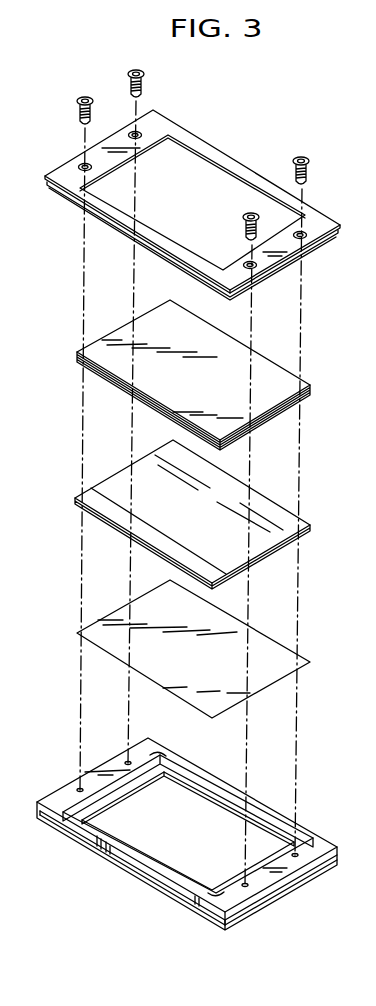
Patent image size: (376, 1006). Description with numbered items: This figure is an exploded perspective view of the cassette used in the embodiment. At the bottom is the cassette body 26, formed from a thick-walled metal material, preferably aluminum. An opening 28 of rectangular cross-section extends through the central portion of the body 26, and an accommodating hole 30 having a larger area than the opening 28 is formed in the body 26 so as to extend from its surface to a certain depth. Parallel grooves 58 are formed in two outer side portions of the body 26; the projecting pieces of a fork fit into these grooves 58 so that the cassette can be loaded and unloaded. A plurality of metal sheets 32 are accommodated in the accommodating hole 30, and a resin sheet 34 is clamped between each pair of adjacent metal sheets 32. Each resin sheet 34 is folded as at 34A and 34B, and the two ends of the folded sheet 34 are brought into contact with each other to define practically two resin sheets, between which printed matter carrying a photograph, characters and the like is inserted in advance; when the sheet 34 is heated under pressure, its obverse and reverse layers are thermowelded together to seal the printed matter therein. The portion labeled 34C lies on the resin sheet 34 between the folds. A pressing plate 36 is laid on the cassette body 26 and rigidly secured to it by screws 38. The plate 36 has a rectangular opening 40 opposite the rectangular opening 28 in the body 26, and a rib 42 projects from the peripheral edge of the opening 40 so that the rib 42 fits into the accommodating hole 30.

The cassette body 26 is at (179, 834).
The opening 28 is at (187, 790).
The accommodating hole 30 is at (210, 790).
The metal sheets 32 is at (277, 377).
The resin sheet 34 is at (216, 514).
The fold 34A is at (150, 547).
The fold 34B is at (264, 493).
The plate middle layer 34C is at (181, 540).
The pressing plate 36 is at (330, 230).
The screws 38 is at (80, 118).
The rectangular opening 40 is at (232, 163).
The rib 42 is at (109, 228).
The grooves 58 is at (37, 813).